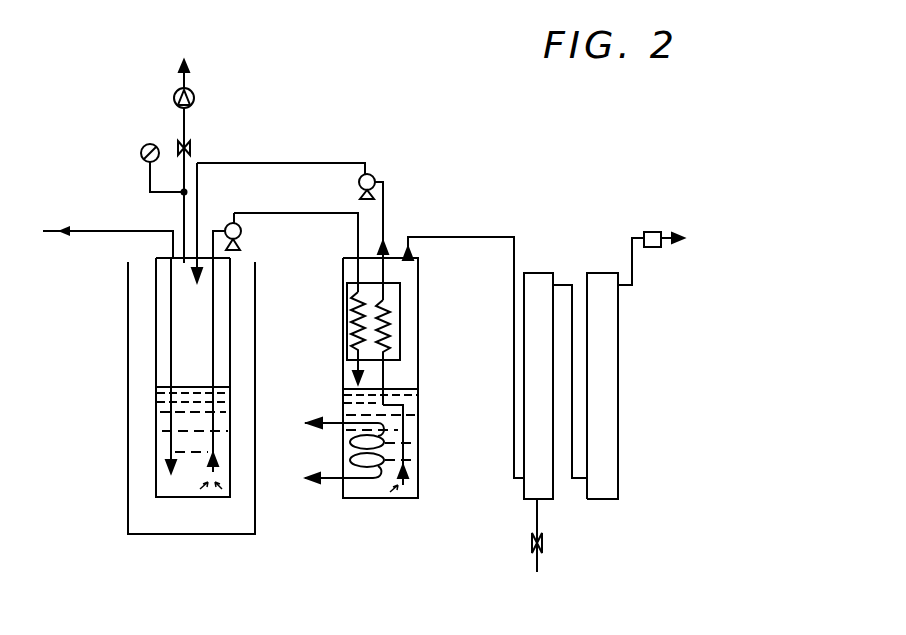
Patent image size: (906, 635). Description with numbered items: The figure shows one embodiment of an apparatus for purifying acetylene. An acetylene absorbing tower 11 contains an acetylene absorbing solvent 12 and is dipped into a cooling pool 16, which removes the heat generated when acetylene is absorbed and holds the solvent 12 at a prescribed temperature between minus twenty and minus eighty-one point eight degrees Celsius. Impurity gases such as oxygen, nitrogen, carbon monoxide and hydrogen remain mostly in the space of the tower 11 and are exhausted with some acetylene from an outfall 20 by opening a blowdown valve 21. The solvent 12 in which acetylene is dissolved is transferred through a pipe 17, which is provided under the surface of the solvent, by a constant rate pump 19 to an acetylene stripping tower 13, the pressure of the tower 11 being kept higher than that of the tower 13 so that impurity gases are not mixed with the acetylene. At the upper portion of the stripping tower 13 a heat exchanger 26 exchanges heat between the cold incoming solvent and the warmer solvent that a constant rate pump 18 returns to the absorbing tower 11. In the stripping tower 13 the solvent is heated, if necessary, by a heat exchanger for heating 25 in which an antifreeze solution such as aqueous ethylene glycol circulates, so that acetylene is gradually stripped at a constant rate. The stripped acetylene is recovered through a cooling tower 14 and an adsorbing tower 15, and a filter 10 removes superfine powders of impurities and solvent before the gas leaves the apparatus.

The filter 10 is at (660, 232).
The acetylene absorbing tower 11 is at (156, 413).
The acetylene absorbing solvent 12 is at (183, 487).
The acetylene stripping tower 13 is at (377, 500).
The cooling tower 14 is at (542, 277).
The adsorbing tower 15 is at (607, 277).
The cooling pool 16 is at (128, 487).
The pipe 17 is at (215, 323).
The constant rate pump 18 is at (373, 180).
The constant rate pump 19 is at (242, 238).
The outfall 20 is at (175, 93).
The blowdown valve 21 is at (182, 143).
The heat exchanger for heating 25 is at (325, 483).
The heat exchanger 26 is at (400, 327).